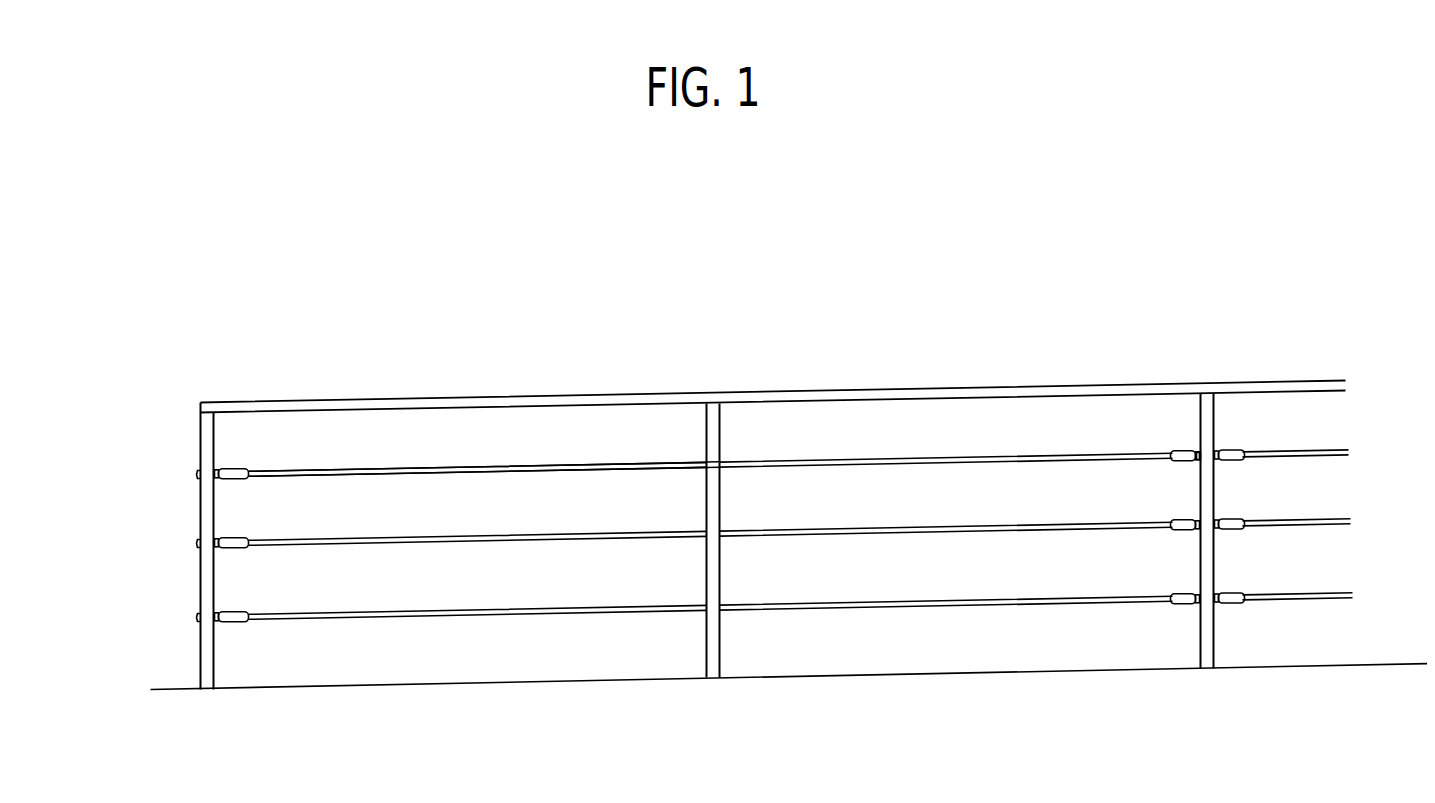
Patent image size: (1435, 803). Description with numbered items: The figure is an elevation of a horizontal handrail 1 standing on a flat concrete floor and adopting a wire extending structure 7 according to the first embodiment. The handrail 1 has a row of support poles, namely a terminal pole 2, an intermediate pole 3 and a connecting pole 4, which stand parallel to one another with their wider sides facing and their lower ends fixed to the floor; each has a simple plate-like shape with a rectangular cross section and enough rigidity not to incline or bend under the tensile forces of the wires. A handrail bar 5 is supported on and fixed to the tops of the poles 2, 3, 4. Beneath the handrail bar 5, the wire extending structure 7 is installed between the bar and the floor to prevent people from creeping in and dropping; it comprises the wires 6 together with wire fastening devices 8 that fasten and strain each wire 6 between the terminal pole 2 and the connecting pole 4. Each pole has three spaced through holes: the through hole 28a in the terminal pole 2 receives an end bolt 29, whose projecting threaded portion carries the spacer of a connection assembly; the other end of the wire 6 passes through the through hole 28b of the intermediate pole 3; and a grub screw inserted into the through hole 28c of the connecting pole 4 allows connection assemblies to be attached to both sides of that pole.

The handrail 1 is at (828, 307).
The terminal pole 2 is at (214, 645).
The intermediate pole 3 is at (714, 633).
The connecting pole 4 is at (1213, 627).
The handrail bar 5 is at (556, 398).
The wire 6 is at (882, 457).
The wire extending structure 7 is at (332, 454).
The wire fastening device 8 is at (252, 456).
The through hole 28a is at (193, 497).
The through hole 28b is at (700, 480).
The through hole 28c is at (1189, 475).
The end bolt 29 is at (197, 473).